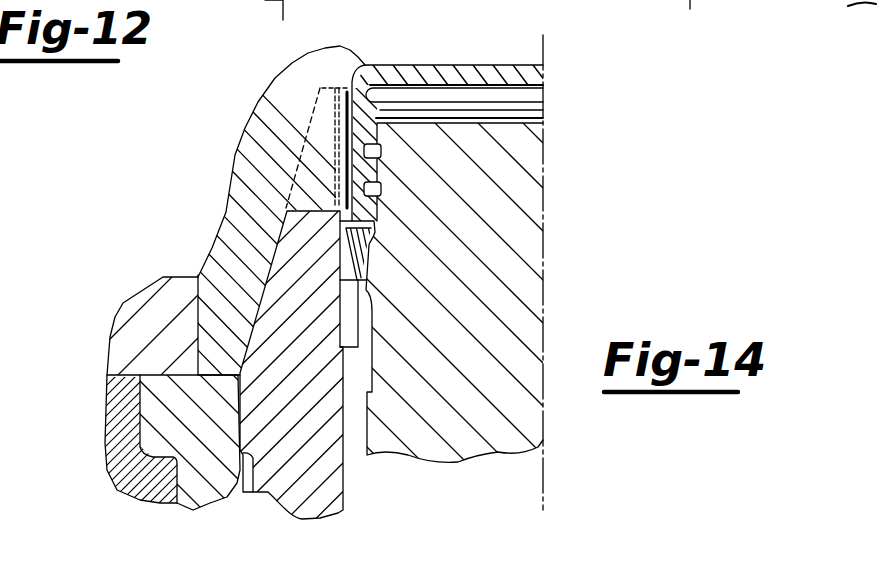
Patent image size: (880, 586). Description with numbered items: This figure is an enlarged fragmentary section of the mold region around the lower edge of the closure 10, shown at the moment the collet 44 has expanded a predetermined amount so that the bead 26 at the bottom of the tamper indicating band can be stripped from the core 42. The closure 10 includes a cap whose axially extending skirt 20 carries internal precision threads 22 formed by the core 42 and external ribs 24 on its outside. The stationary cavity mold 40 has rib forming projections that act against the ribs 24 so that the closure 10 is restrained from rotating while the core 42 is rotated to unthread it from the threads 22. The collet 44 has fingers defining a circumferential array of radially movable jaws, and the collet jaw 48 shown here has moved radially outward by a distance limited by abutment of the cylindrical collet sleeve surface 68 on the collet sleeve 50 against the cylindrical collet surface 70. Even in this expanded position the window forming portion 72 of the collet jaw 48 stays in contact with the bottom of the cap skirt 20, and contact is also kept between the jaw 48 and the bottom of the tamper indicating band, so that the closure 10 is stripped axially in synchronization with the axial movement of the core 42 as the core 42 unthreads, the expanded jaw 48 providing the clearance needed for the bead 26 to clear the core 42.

The threaded closure 10 is at (456, 64).
The skirt 20 is at (340, 115).
The internal precision threads 22 is at (500, 102).
The external ribs 24 is at (340, 90).
The bead 26 is at (365, 268).
The cavity mold 40 is at (212, 297).
The core 42 is at (468, 444).
The collet 44 is at (345, 499).
The collet jaw 48 is at (279, 244).
The collet sleeve 50 is at (150, 403).
The cylindrical collet sleeve surface 68 is at (252, 492).
The cylindrical collet surface 70 is at (246, 472).
The window forming portion 72 is at (335, 205).